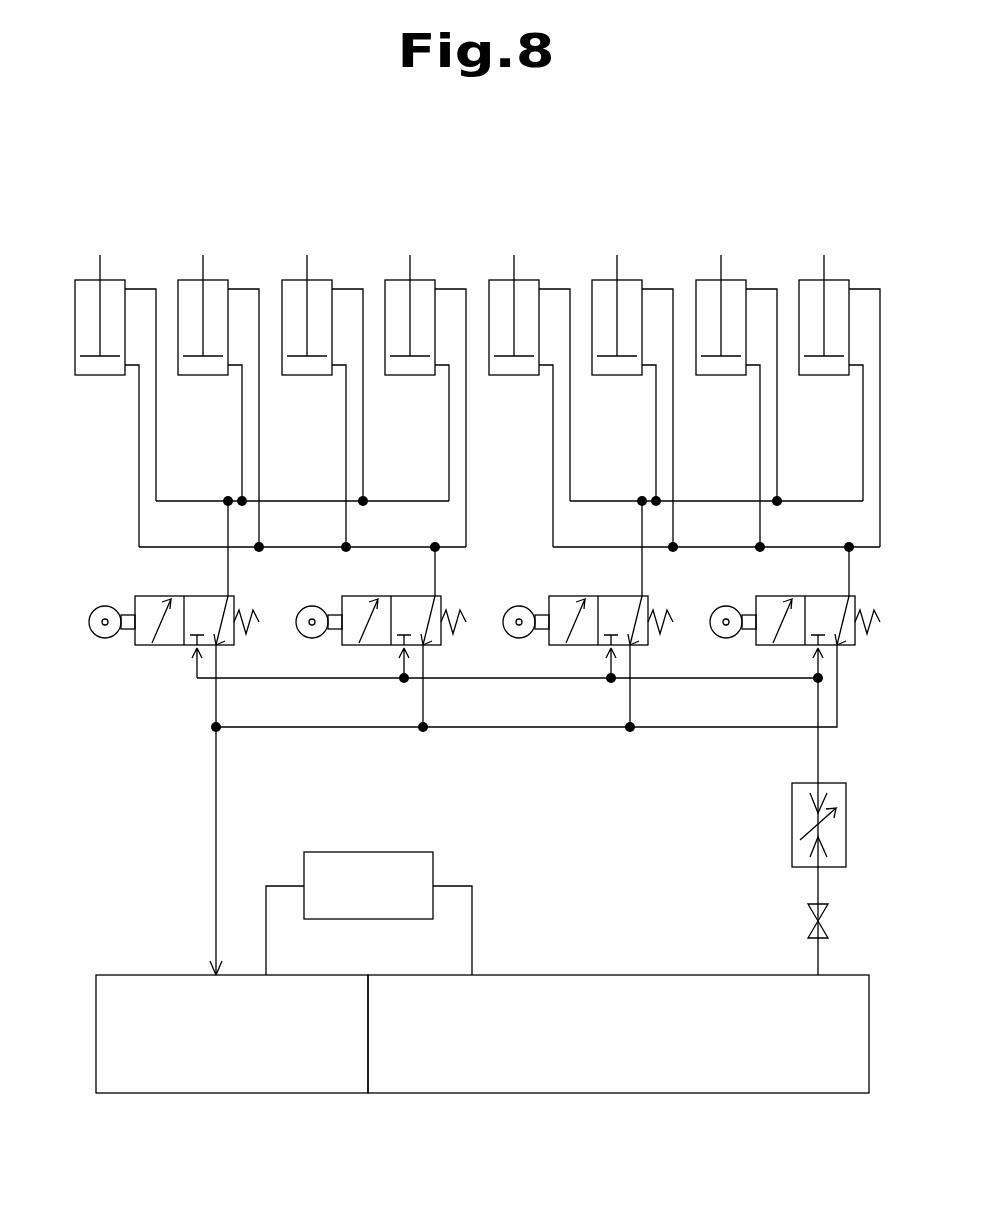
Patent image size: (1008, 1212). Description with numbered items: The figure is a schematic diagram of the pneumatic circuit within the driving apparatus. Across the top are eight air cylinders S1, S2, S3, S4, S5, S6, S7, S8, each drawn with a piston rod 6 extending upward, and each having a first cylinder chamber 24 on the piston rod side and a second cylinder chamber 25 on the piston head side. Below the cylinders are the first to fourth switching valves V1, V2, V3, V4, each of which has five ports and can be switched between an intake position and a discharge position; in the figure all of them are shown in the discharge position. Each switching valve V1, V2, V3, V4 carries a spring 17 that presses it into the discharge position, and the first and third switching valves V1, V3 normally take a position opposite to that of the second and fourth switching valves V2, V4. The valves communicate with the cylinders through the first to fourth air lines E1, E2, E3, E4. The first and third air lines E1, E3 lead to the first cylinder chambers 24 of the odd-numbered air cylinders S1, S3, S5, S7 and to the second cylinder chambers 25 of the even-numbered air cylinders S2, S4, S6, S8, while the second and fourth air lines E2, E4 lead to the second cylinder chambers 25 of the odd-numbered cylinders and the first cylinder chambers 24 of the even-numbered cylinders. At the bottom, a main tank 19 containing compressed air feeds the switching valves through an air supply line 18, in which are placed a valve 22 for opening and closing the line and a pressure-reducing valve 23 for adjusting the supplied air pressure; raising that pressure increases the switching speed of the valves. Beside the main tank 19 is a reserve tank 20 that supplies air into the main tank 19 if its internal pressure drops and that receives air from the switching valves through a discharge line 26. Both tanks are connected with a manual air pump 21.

The piston rod 6 is at (830, 262).
The first cylinder chamber 24 is at (891, 392).
The second cylinder chamber 25 is at (835, 402).
The spring 17 is at (886, 652).
The air supply line 18 is at (818, 752).
The main tank 19 is at (712, 1093).
The reserve tank 20 is at (316, 1093).
The manual air pump 21 is at (395, 852).
The valve 22 is at (828, 925).
The pressure-reducing valve 23 is at (846, 852).
The discharge line 26 is at (216, 780).
The first air cylinder S1 is at (67, 287).
The second air cylinder S2 is at (170, 287).
The third air cylinder S3 is at (274, 287).
The fourth air cylinder S4 is at (377, 287).
The fifth air cylinder S5 is at (481, 287).
The sixth air cylinder S6 is at (584, 287).
The seventh air cylinder S7 is at (688, 287).
The eighth air cylinder S8 is at (791, 287).
The first air line E1 is at (228, 572).
The second air line E2 is at (435, 572).
The third air line E3 is at (642, 572).
The fourth air line E4 is at (849, 572).
The first switching valve V1 is at (175, 646).
The second switching valve V2 is at (382, 646).
The third switching valve V3 is at (589, 646).
The fourth switching valve V4 is at (796, 646).